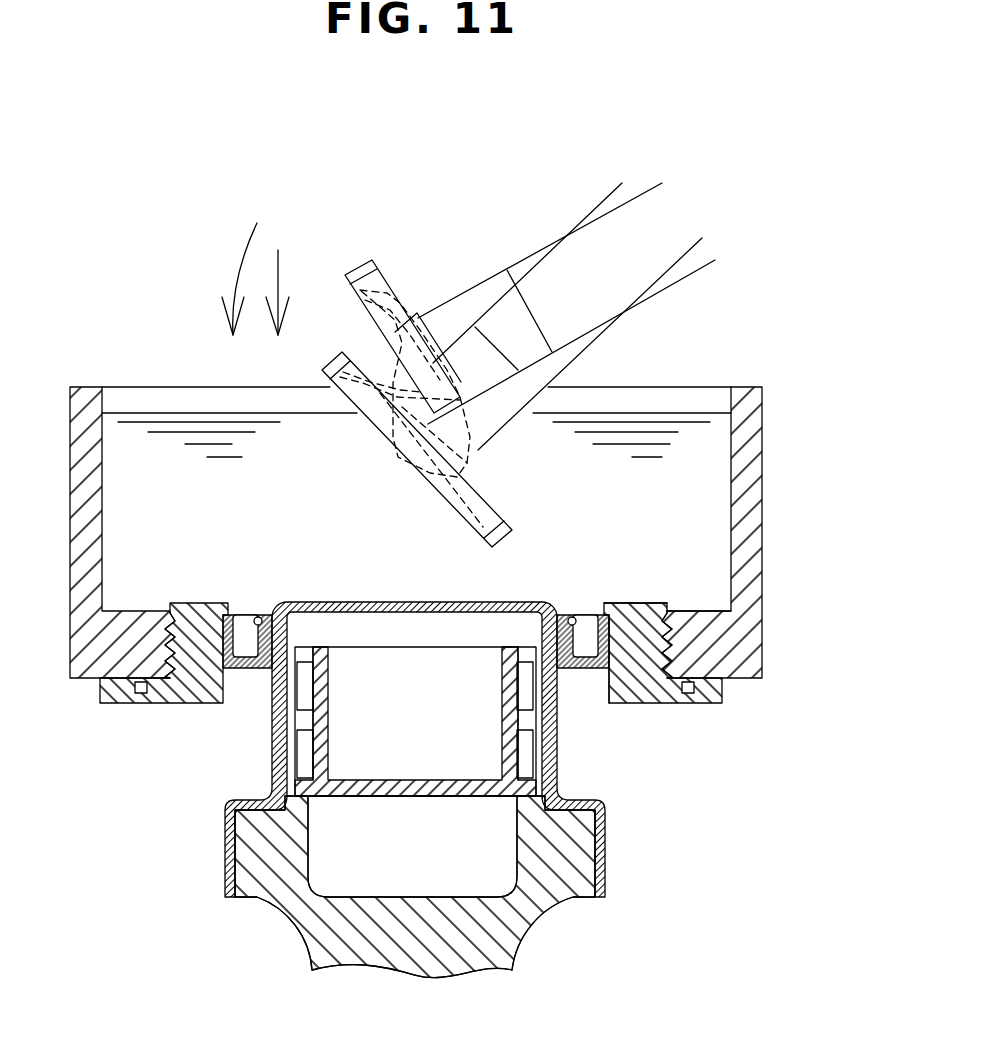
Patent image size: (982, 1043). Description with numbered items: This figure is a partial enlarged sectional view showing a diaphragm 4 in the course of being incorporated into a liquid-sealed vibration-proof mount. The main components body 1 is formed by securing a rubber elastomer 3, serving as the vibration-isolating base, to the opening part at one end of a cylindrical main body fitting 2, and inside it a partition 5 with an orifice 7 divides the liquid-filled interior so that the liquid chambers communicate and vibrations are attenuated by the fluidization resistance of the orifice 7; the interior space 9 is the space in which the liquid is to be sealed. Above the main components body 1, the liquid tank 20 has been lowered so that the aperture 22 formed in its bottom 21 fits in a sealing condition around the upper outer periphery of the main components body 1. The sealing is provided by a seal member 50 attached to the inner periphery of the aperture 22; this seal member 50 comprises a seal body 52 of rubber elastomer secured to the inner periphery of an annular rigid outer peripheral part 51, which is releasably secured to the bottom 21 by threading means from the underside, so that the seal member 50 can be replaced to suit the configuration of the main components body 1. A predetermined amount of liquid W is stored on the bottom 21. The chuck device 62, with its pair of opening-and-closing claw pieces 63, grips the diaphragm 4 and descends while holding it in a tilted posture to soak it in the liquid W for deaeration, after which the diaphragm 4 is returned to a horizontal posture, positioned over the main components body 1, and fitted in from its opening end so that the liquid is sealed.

The main components body 1 is at (357, 905).
The main body fitting 2 is at (270, 713).
The rubber elastomer 3 is at (272, 873).
The diaphragm 4 is at (356, 268).
The partition 5 is at (415, 843).
The orifice 7 is at (303, 745).
The interior space 9 is at (467, 822).
The liquid tank 20 is at (764, 430).
The bottom 21 is at (688, 612).
The aperture 22 is at (673, 612).
The seal member 50 is at (302, 545).
The outer peripheral part 51 is at (193, 628).
The seal body 52 is at (257, 617).
The chuck device 62 is at (610, 180).
The claw pieces 63 is at (528, 258).
The liquid W is at (640, 425).